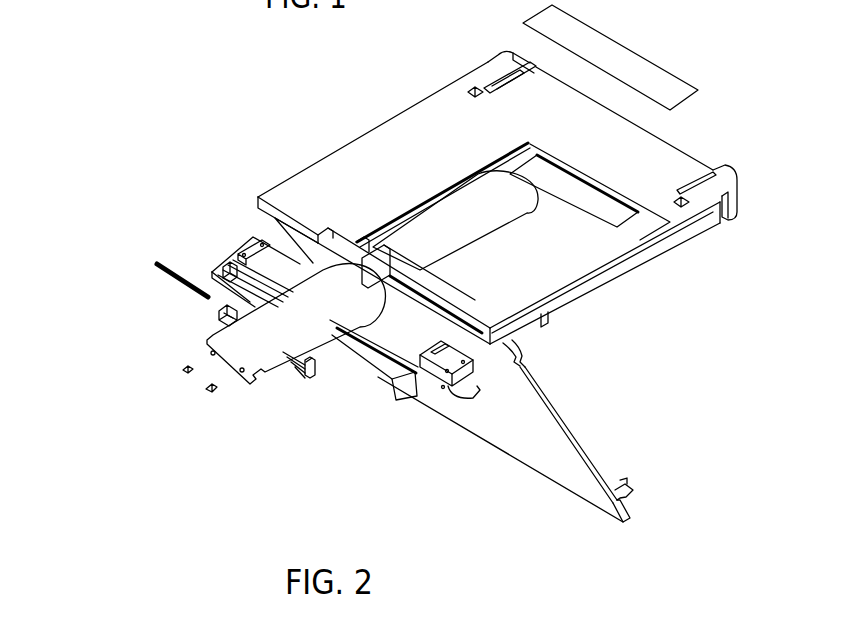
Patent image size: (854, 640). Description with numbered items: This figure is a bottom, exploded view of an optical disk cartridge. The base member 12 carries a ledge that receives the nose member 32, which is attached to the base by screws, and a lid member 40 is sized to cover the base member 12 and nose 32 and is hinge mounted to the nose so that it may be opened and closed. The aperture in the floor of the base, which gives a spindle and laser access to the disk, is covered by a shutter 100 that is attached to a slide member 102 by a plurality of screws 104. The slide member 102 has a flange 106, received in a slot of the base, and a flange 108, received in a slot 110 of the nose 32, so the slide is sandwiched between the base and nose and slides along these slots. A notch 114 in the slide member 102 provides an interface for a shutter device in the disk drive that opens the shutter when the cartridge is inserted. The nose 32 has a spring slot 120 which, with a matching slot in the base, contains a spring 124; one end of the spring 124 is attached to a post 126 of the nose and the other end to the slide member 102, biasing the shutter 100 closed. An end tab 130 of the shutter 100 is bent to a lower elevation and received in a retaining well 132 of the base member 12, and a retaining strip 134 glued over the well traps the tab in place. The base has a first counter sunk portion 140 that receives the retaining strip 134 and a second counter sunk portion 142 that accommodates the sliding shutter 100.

The base member 12 is at (393, 116).
The nose member 32 is at (252, 237).
The lid member 40 is at (532, 438).
The shutter 100 is at (306, 333).
The slide member 102 is at (316, 380).
The screws 104 is at (207, 388).
The flange 106 is at (311, 349).
The flange 108 is at (306, 374).
The slot 110 is at (392, 388).
The notch 114 is at (219, 320).
The spring slot 120 is at (234, 260).
The spring 124 is at (150, 268).
The post 126 is at (222, 266).
The end tab 130 is at (366, 275).
The retaining well 132 is at (565, 187).
The retaining strip 134 is at (585, 45).
The first counter sunk portion 140 is at (530, 143).
The second counter sunk portion 142 is at (486, 170).